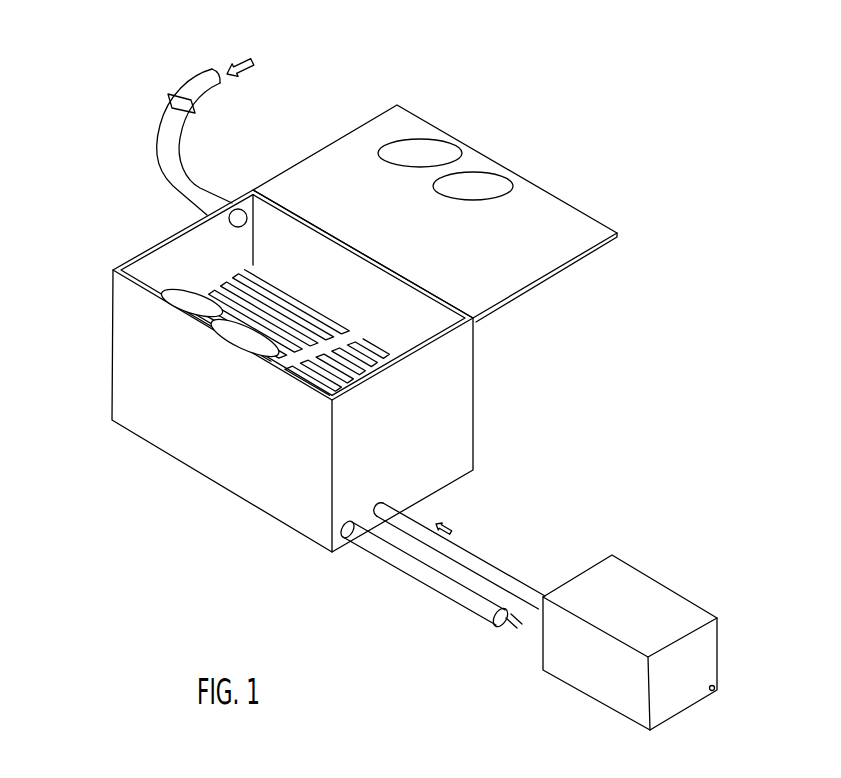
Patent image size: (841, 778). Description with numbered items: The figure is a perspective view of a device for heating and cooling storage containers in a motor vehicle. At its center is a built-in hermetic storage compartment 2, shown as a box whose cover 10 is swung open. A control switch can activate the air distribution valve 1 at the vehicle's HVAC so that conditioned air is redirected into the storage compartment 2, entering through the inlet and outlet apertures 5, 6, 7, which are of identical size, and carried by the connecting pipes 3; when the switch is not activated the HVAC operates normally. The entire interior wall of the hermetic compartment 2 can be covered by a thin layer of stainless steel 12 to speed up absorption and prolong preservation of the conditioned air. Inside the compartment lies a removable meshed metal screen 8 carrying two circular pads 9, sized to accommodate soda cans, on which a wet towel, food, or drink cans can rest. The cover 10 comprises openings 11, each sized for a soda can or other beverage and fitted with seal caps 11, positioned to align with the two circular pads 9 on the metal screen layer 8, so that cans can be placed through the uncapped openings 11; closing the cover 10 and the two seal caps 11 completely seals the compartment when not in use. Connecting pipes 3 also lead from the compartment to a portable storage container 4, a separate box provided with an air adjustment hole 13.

The air distribution valve 1 is at (162, 106).
The hermetic storage compartment 2 is at (450, 413).
The connecting pipes 3 is at (165, 178).
The portable storage container 4 is at (675, 590).
The inlet aperture 5 is at (229, 221).
The outlet aperture 6 is at (357, 508).
The outlet aperture 7 is at (350, 538).
The meshed metal screen 8 is at (397, 355).
The circular pads 9 is at (236, 335).
The cover 10 is at (527, 193).
The openings 11 is at (427, 138).
The thin layer of stainless steel 12 is at (400, 308).
The air adjustment hole 13 is at (714, 686).